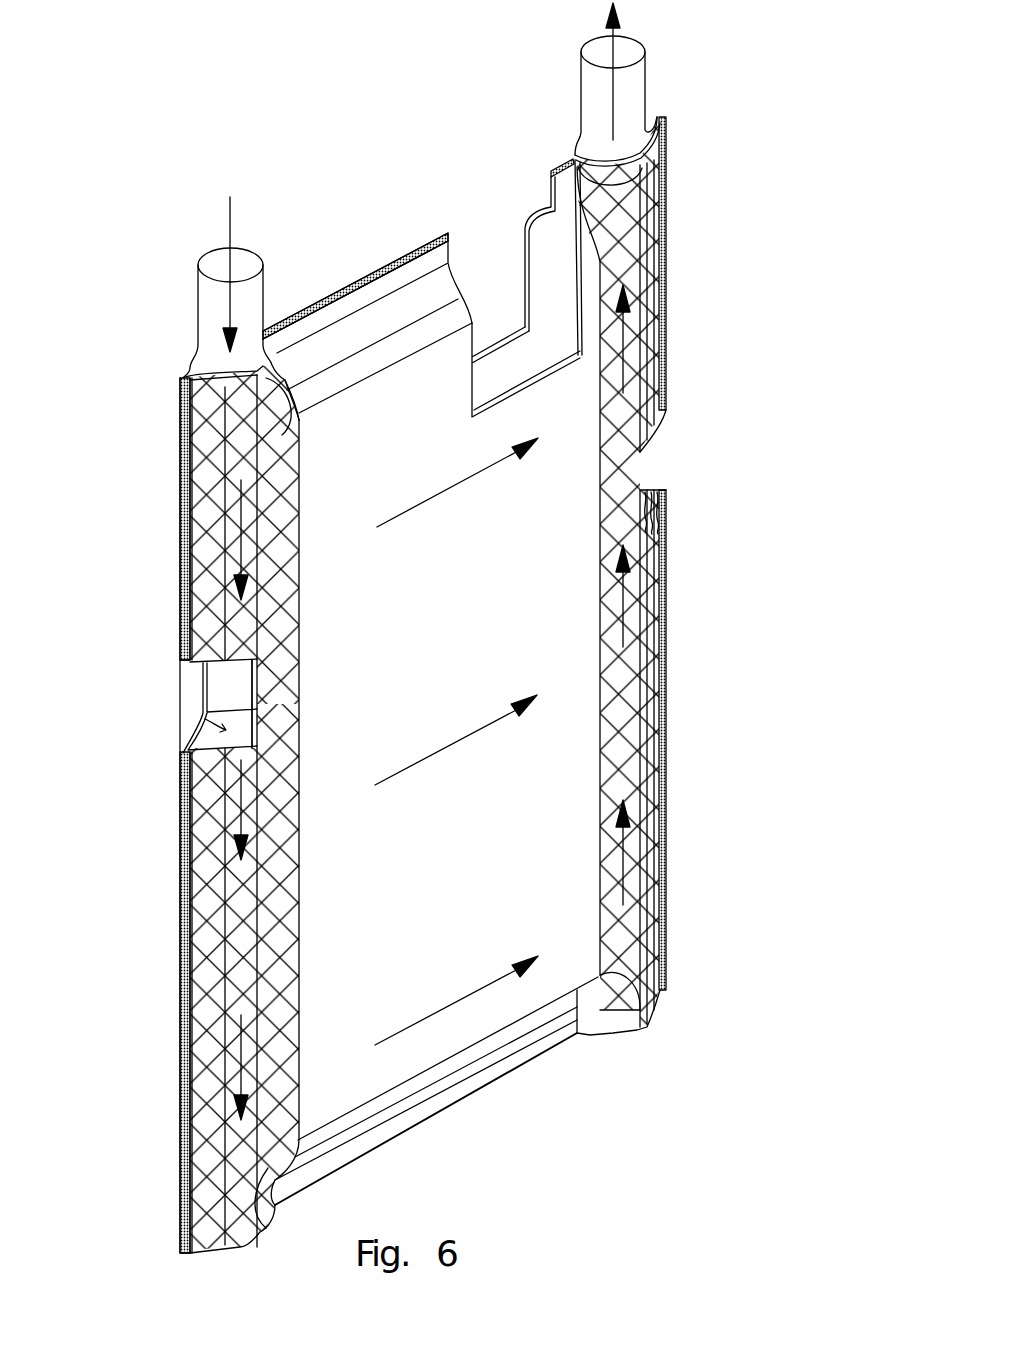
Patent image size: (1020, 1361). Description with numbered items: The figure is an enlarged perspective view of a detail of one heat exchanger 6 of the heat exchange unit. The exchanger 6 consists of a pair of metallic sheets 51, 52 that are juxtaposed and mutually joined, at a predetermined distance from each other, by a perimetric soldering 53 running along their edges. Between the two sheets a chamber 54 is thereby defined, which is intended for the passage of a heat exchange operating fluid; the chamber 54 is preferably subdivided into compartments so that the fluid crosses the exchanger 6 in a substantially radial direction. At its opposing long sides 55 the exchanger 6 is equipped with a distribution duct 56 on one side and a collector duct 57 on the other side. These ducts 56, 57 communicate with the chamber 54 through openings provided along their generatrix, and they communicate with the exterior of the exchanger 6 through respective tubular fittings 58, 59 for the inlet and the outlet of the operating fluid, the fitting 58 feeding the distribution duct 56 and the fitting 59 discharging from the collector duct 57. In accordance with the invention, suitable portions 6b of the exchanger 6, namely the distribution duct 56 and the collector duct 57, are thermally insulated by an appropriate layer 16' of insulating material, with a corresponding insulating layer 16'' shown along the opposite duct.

The heat exchanger 6 is at (736, 241).
The thermally insulated portion 6b is at (627, 690).
The layer of insulating material 16' is at (659, 576).
The inlet distribution channel 16'' is at (199, 809).
The metallic sheet 51 is at (419, 266).
The metallic sheet 52 is at (367, 273).
The perimetric soldering 53 is at (304, 310).
The chamber 54 is at (507, 359).
The long side 55 is at (673, 595).
The distribution duct 56 is at (200, 722).
The collector duct 57 is at (648, 492).
The tubular fitting 58 is at (205, 307).
The tubular fitting 59 is at (640, 80).